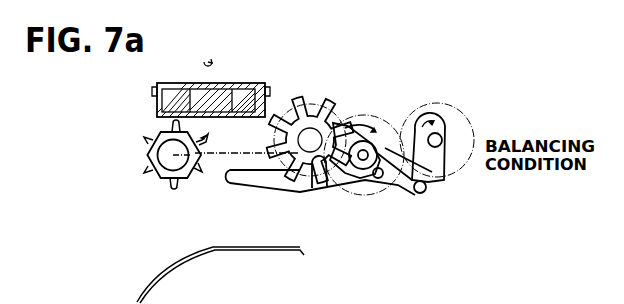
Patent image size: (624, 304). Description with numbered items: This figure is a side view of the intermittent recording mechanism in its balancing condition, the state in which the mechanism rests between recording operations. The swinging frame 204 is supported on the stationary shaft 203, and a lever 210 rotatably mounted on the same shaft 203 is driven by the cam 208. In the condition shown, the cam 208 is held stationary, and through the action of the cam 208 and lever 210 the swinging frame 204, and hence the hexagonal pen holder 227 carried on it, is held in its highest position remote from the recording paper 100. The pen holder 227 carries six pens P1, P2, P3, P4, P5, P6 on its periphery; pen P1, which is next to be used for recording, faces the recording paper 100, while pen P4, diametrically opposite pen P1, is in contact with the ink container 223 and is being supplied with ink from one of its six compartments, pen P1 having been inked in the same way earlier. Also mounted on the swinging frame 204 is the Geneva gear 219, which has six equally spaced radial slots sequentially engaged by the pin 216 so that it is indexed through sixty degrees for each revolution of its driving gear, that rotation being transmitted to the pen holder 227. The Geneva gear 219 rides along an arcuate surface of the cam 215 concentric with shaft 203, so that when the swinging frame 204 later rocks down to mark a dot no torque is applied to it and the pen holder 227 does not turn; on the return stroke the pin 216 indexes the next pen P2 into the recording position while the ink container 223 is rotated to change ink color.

The recording paper 100 is at (156, 277).
The stationary shaft 203 is at (364, 150).
The swinging frame 204 is at (310, 127).
The cam 208 is at (430, 125).
The lever 210 is at (247, 178).
The cam 215 is at (359, 165).
The pin 216 is at (380, 179).
The Geneva gear 219 is at (318, 186).
The ink container 223 is at (183, 100).
The pen holder 227 is at (157, 176).
The pen P1 is at (172, 188).
The pen P2 is at (146, 170).
The pen P3 is at (145, 141).
The pen P4 is at (171, 128).
The pen P5 is at (206, 137).
The pen P6 is at (199, 175).